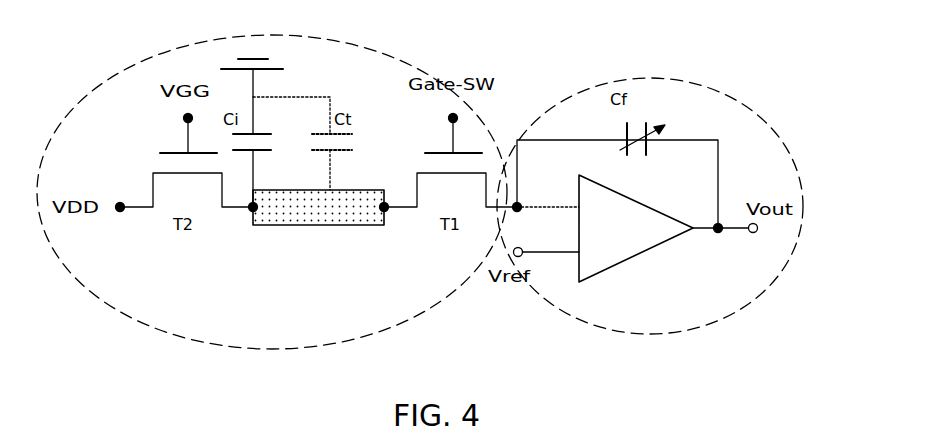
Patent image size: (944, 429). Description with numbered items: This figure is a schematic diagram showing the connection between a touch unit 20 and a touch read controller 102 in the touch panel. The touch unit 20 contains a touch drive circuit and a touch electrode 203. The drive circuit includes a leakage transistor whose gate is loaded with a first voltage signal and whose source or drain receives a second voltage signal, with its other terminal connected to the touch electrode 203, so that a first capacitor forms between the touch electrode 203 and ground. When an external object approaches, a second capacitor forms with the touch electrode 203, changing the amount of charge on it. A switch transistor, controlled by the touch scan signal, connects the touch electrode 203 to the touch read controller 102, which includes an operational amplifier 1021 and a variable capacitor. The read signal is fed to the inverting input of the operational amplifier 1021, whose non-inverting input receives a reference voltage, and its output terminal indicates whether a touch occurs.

The touch unit 20 is at (152, 51).
The touch read controller 102 is at (703, 82).
The touch electrode 203 is at (307, 212).
The operational amplifier 1021 is at (628, 240).